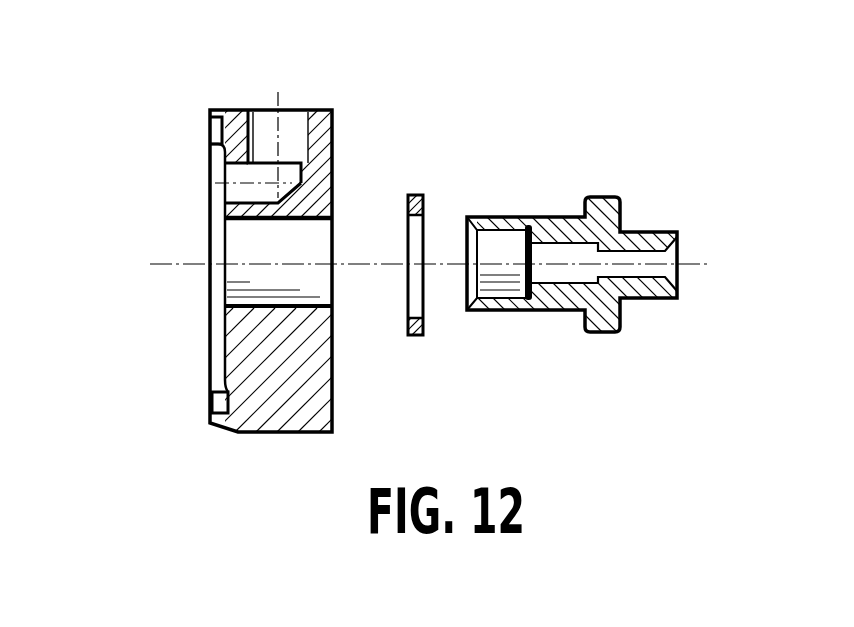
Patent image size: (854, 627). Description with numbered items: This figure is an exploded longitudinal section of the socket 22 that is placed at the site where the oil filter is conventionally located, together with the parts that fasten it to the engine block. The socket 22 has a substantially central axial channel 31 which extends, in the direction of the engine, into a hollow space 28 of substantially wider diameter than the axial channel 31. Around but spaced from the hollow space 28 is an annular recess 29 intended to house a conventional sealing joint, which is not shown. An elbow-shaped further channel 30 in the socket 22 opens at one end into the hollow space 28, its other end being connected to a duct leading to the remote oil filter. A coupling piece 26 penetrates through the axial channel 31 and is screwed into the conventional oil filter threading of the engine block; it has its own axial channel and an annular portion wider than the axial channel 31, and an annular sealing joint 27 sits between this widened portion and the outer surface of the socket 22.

The socket 22 is at (337, 161).
The coupling piece 26 is at (557, 215).
The annular sealing joint 27 is at (424, 200).
The hollow space 28 is at (217, 213).
The annular recess 29 is at (213, 128).
The elbow-shaped further channel 30 is at (280, 128).
The axial channel 31 is at (248, 228).